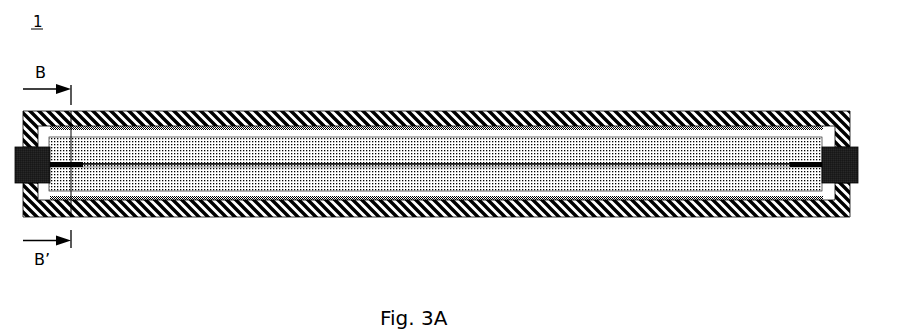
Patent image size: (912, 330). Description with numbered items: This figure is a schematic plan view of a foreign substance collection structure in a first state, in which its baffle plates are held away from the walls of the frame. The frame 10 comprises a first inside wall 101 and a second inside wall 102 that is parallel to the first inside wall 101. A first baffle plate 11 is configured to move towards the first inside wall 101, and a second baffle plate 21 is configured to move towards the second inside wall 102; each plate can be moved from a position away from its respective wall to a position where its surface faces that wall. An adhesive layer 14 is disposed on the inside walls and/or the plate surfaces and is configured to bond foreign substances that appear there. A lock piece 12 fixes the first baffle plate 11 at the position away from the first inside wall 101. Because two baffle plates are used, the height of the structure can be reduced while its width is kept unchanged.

The frame 10 is at (436, 165).
The first inside wall 101 is at (436, 119).
The second inside wall 102 is at (436, 211).
The first baffle plate 11 is at (435, 128).
The second baffle plate 21 is at (435, 140).
The lock piece 12 is at (80, 136).
The adhesive layer 14 is at (436, 165).